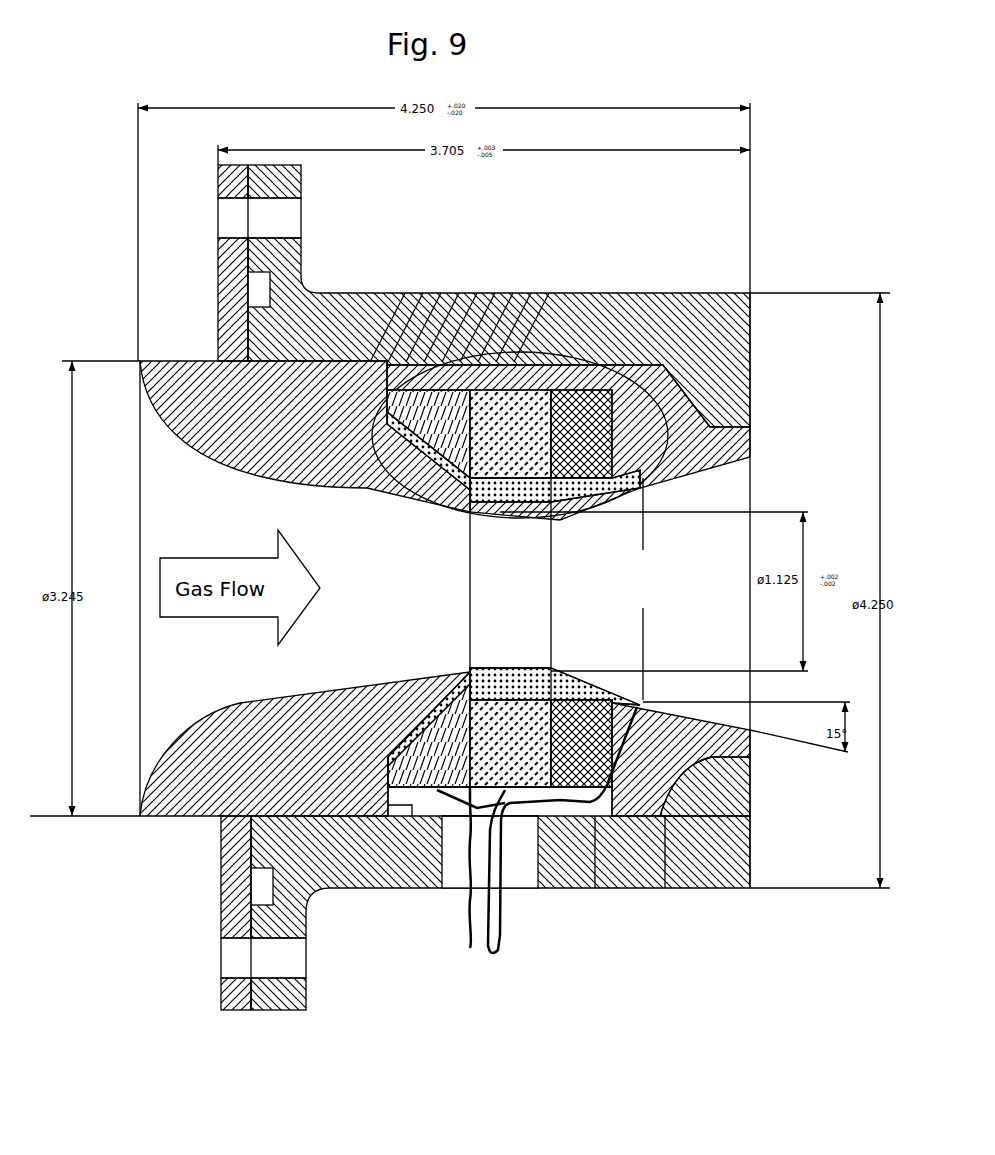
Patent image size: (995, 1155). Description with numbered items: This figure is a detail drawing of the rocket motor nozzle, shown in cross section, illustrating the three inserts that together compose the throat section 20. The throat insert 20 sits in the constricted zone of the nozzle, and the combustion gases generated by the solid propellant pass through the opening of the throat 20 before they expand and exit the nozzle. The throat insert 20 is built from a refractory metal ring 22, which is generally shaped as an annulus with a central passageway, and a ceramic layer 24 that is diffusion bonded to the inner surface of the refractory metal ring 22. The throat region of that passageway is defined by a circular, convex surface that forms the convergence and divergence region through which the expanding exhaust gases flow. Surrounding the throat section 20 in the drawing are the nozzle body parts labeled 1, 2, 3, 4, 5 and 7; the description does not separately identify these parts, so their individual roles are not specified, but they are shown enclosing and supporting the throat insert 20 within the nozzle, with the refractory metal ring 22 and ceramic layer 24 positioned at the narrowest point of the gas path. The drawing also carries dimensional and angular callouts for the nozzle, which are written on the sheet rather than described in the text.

The outlet ring insert 1 is at (652, 790).
The inlet body 2 is at (168, 817).
The outlet hub 3 is at (361, 888).
The mounting flange 4 is at (220, 913).
The sensor electrodes 5 is at (585, 790).
The lead wires 7 is at (498, 930).
The throat insert 20 is at (520, 510).
The refractory metal ring 22 is at (387, 413).
The ceramic layer 24 is at (573, 493).